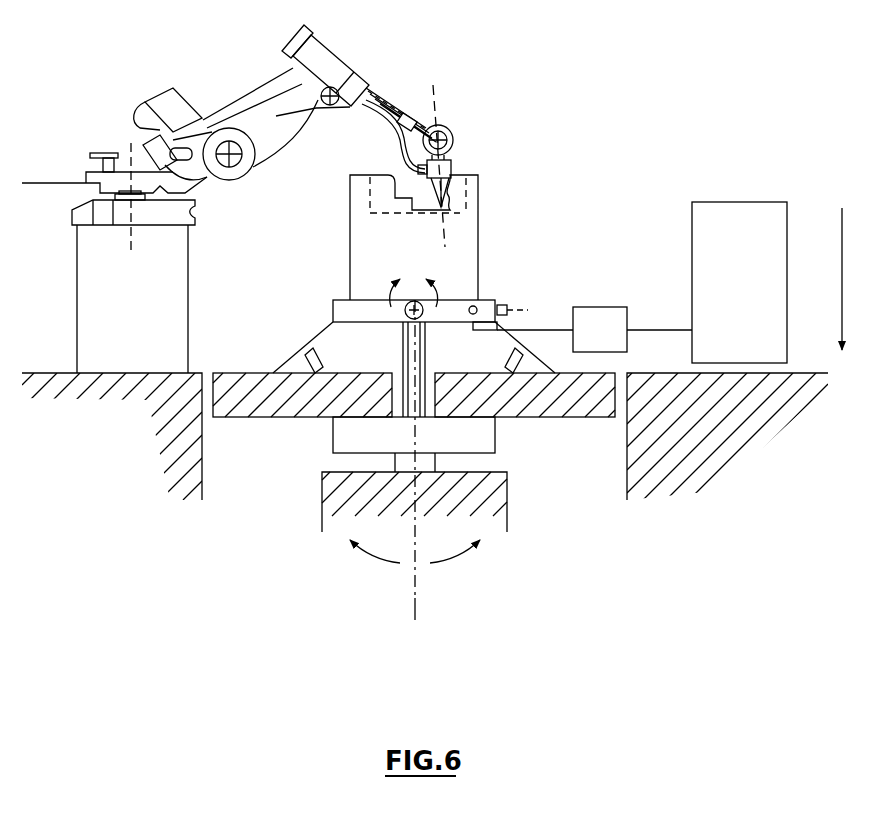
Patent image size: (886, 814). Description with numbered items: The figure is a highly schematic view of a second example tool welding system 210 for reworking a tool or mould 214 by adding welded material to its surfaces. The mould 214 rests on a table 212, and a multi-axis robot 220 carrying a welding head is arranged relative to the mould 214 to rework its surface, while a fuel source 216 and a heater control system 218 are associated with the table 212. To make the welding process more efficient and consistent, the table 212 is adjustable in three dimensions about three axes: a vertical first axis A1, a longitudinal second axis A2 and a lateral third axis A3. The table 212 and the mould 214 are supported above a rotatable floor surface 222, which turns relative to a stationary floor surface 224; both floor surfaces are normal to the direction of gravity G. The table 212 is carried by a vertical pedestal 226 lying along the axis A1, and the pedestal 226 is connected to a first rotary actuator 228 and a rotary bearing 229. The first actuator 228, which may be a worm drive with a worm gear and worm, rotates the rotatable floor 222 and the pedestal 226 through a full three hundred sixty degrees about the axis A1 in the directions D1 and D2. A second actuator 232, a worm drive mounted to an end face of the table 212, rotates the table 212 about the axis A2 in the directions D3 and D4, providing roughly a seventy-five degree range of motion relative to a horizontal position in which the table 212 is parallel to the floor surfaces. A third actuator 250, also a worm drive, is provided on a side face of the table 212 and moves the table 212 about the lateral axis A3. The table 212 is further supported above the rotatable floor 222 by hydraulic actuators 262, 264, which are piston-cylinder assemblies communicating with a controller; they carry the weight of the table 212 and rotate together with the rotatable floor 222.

The welding system 210 is at (528, 54).
The table 212 is at (333, 306).
The tool or mould 214 is at (479, 230).
The fuel source 216 is at (692, 248).
The heater control system 218 is at (597, 307).
The multi-axis robot 220 is at (158, 87).
The rotatable floor surface 222 is at (228, 373).
The stationary floor surface 224 is at (47, 373).
The vertical pedestal 226 is at (427, 343).
The first actuator 228 is at (403, 462).
The rotary bearing 229 is at (333, 433).
The second actuator 232 is at (400, 313).
The third actuator 250 is at (500, 303).
The hydraulic actuator 262 is at (330, 361).
The hydraulic actuator 264 is at (527, 353).
The first axis A1 is at (415, 603).
The second axis A2 is at (430, 294).
The third axis A3 is at (533, 305).
The rotation direction D1 is at (458, 557).
The rotation direction D2 is at (370, 562).
The rotation direction D3 is at (391, 283).
The rotation direction D4 is at (437, 272).
The direction of gravity G is at (842, 272).